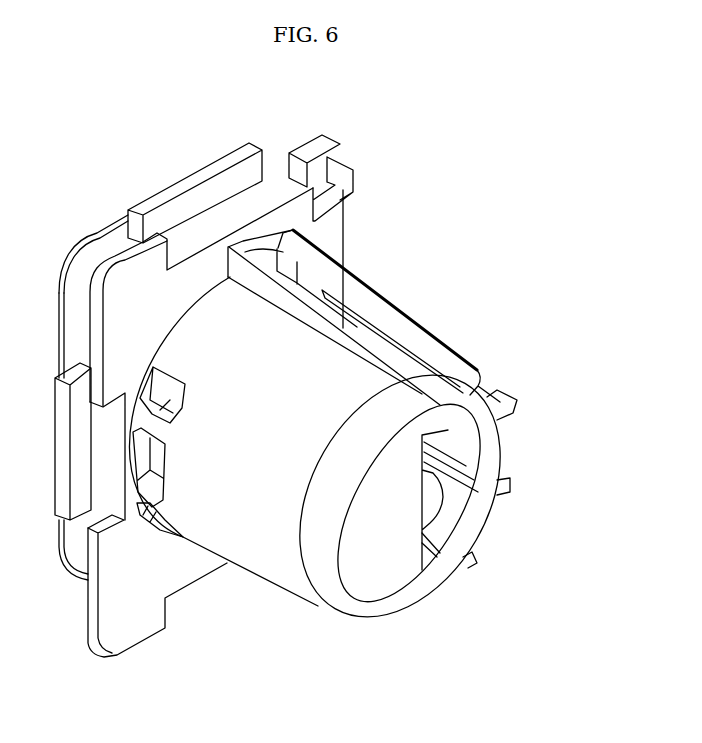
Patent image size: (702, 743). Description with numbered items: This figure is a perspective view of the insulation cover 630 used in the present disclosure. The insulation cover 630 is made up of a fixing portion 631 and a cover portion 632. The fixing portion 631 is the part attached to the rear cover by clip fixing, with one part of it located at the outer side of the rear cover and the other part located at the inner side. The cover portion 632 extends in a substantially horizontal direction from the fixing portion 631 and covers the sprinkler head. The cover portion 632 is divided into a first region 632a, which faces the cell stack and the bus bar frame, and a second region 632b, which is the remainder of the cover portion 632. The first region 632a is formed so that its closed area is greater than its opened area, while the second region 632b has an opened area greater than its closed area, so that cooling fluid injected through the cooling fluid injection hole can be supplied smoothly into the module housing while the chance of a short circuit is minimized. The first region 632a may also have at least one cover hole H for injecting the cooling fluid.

The insulation cover 630 is at (116, 155).
The fixing portion 631 is at (314, 140).
The cover portion 632 is at (425, 296).
The first region 632a is at (303, 584).
The second region 632b is at (502, 456).
The cover hole H is at (162, 462).